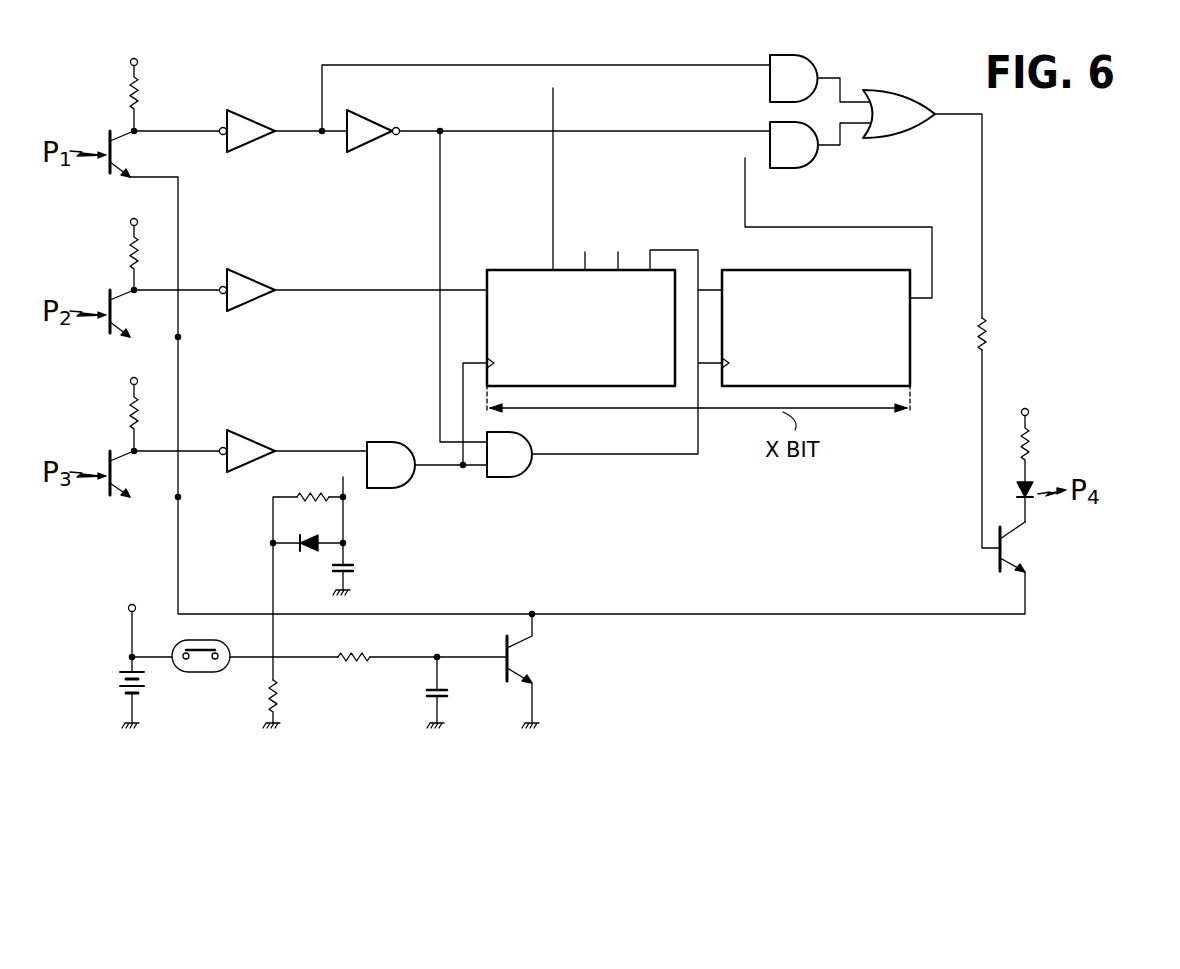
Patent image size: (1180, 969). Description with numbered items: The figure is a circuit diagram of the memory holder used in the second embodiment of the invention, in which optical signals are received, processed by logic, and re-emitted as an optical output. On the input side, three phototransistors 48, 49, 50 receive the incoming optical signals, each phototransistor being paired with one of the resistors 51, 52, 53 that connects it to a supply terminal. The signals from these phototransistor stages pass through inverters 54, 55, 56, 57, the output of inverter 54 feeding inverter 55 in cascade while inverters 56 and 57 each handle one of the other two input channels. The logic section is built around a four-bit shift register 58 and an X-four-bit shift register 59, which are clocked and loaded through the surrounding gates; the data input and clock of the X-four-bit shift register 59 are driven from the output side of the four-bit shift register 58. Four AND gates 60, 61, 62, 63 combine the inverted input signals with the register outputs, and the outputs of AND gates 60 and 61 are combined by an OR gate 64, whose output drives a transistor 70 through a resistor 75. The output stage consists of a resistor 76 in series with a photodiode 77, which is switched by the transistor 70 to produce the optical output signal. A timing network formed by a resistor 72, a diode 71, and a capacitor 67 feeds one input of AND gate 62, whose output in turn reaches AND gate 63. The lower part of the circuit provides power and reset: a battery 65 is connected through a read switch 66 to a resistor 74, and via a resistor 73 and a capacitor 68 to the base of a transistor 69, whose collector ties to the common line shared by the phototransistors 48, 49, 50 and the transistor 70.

The phototransistor 48 is at (118, 154).
The phototransistor 49 is at (118, 315).
The phototransistor 50 is at (118, 476).
The resistor 51 is at (126, 100).
The resistor 52 is at (126, 258).
The resistor 53 is at (126, 414).
The inverter 54 is at (246, 144).
The inverter 55 is at (364, 144).
The inverter 56 is at (246, 303).
The inverter 57 is at (255, 440).
The four-bit shift register 58 is at (517, 268).
The X-four-bit shift register 59 is at (912, 356).
The AND gate 60 is at (790, 169).
The AND gate 61 is at (818, 60).
The AND gate 62 is at (406, 484).
The AND gate 63 is at (525, 474).
The OR gate 64 is at (893, 139).
The battery 65 is at (118, 692).
The read switch 66 is at (205, 674).
The capacitor 67 is at (356, 569).
The capacitor 68 is at (451, 693).
The transistor 69 is at (518, 654).
The transistor 70 is at (1012, 550).
The diode 71 is at (308, 553).
The resistor 72 is at (311, 463).
The resistor 73 is at (360, 664).
The resistor 74 is at (278, 694).
The resistor 75 is at (987, 331).
The resistor 76 is at (1032, 448).
The photodiode 77 is at (1018, 491).